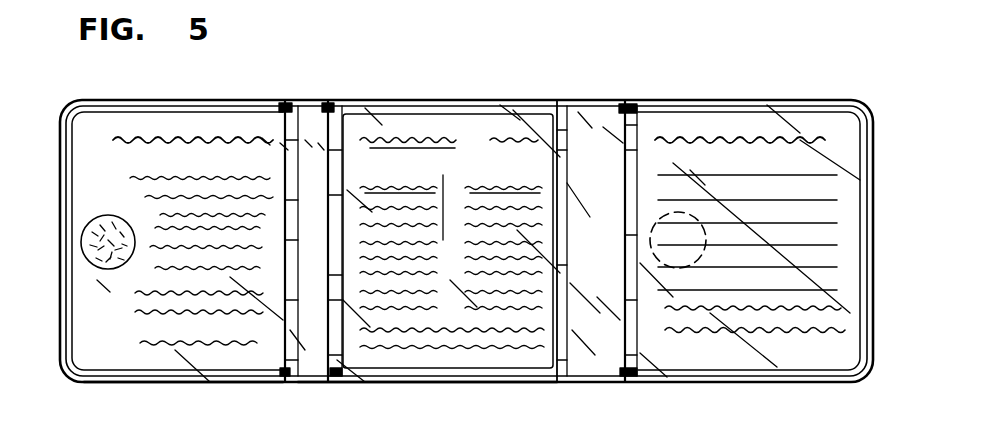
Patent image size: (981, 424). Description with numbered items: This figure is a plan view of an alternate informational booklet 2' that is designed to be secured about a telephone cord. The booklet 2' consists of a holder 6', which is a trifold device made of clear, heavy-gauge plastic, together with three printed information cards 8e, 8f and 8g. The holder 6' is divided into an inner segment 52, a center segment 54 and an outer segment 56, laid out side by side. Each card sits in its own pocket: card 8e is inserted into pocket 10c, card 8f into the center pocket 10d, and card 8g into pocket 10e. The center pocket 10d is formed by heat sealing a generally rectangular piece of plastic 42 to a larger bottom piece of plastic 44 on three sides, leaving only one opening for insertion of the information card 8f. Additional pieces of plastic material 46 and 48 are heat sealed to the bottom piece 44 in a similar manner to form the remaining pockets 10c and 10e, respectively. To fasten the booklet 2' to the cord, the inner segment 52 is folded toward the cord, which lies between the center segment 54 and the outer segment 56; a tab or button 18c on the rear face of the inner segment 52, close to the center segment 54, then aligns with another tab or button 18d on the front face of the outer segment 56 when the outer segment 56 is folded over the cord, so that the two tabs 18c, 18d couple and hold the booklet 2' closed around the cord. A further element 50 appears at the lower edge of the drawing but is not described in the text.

The informational booklet 2' is at (466, 214).
The holder 6' is at (466, 218).
The pocket 10c is at (291, 104).
The center pocket 10d is at (331, 104).
The pocket 10e is at (616, 110).
The rectangular piece of plastic 42 is at (558, 104).
The bottom piece of plastic 44 is at (590, 127).
The piece of plastic material 48 is at (835, 126).
The tab or button 18d is at (90, 232).
The tab or button 18c is at (642, 248).
The outer segment 56 is at (85, 294).
The piece of plastic material 46 is at (162, 401).
The frame section 50 is at (427, 403).
The printed information card 8e is at (282, 384).
The printed information card 8f is at (337, 384).
The printed information card 8g is at (611, 384).
The center segment 54 is at (515, 354).
The inner segment 52 is at (822, 352).